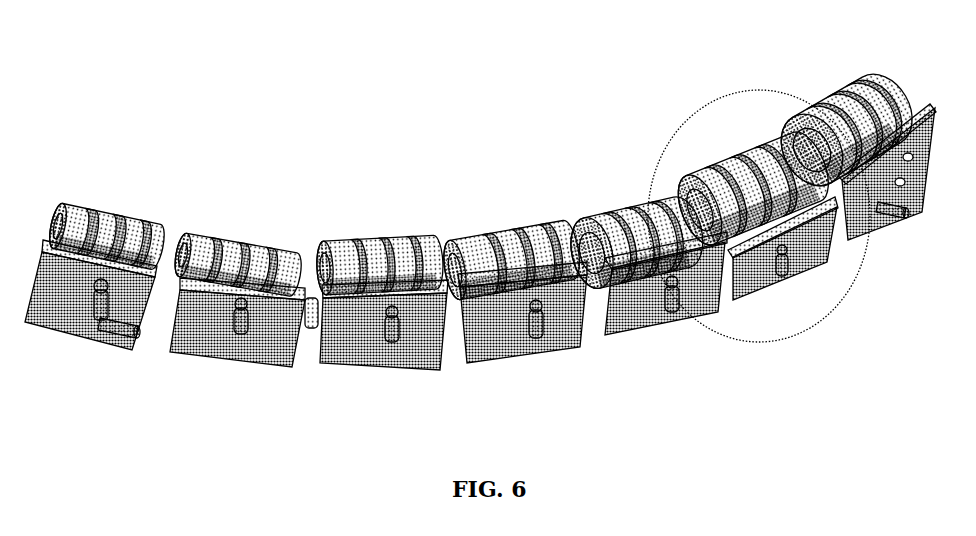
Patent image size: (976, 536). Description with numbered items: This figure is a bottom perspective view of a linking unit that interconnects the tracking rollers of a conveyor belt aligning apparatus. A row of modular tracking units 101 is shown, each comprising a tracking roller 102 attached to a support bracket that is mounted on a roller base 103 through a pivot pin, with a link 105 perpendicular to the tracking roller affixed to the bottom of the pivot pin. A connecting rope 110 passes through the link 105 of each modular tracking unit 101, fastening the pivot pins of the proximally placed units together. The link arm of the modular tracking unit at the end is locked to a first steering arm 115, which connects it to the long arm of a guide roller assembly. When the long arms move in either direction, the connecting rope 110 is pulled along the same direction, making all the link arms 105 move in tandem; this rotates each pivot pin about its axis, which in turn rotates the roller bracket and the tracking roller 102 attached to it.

The modular tracking unit 101 is at (668, 114).
The tracking roller 102 is at (258, 235).
The roller base 103 is at (207, 338).
The link 105 is at (527, 340).
The connecting rope 110 is at (313, 326).
The first steering arm 115 is at (92, 336).